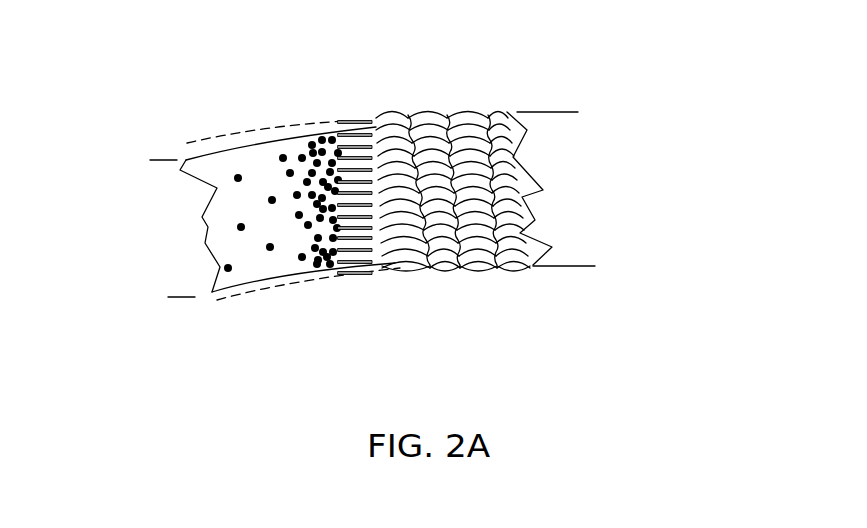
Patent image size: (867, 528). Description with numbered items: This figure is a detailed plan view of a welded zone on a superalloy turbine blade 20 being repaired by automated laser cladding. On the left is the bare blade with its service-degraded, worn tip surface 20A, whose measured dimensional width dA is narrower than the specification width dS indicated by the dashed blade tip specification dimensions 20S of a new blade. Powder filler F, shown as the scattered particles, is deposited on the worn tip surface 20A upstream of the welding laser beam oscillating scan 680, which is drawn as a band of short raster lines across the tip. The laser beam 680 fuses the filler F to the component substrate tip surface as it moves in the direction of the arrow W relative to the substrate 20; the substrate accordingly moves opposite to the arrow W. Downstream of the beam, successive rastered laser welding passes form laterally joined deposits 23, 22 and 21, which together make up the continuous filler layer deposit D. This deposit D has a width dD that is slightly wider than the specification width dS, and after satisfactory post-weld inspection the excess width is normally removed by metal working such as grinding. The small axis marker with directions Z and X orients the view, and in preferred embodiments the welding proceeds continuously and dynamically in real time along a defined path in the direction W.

The superalloy turbine blade 20 is at (367, 293).
The worn tip surface 20A is at (263, 162).
The blade tip specification dimensions 20S is at (280, 126).
The welding laser beam oscillating scan 680 is at (357, 263).
The powder filler F is at (315, 263).
The laterally joined deposit 23 is at (410, 270).
The laterally joined deposit 22 is at (445, 267).
The laterally joined deposit 21 is at (478, 267).
The width of filler layer deposit dD is at (516, 112).
The measured dimensional width dA is at (160, 112).
The specification width dS is at (190, 60).
The continuous filler layer deposit D is at (553, 178).
The arrow of directional movement W is at (350, 27).
The Z axis Z is at (645, 204).
The X axis X is at (684, 172).